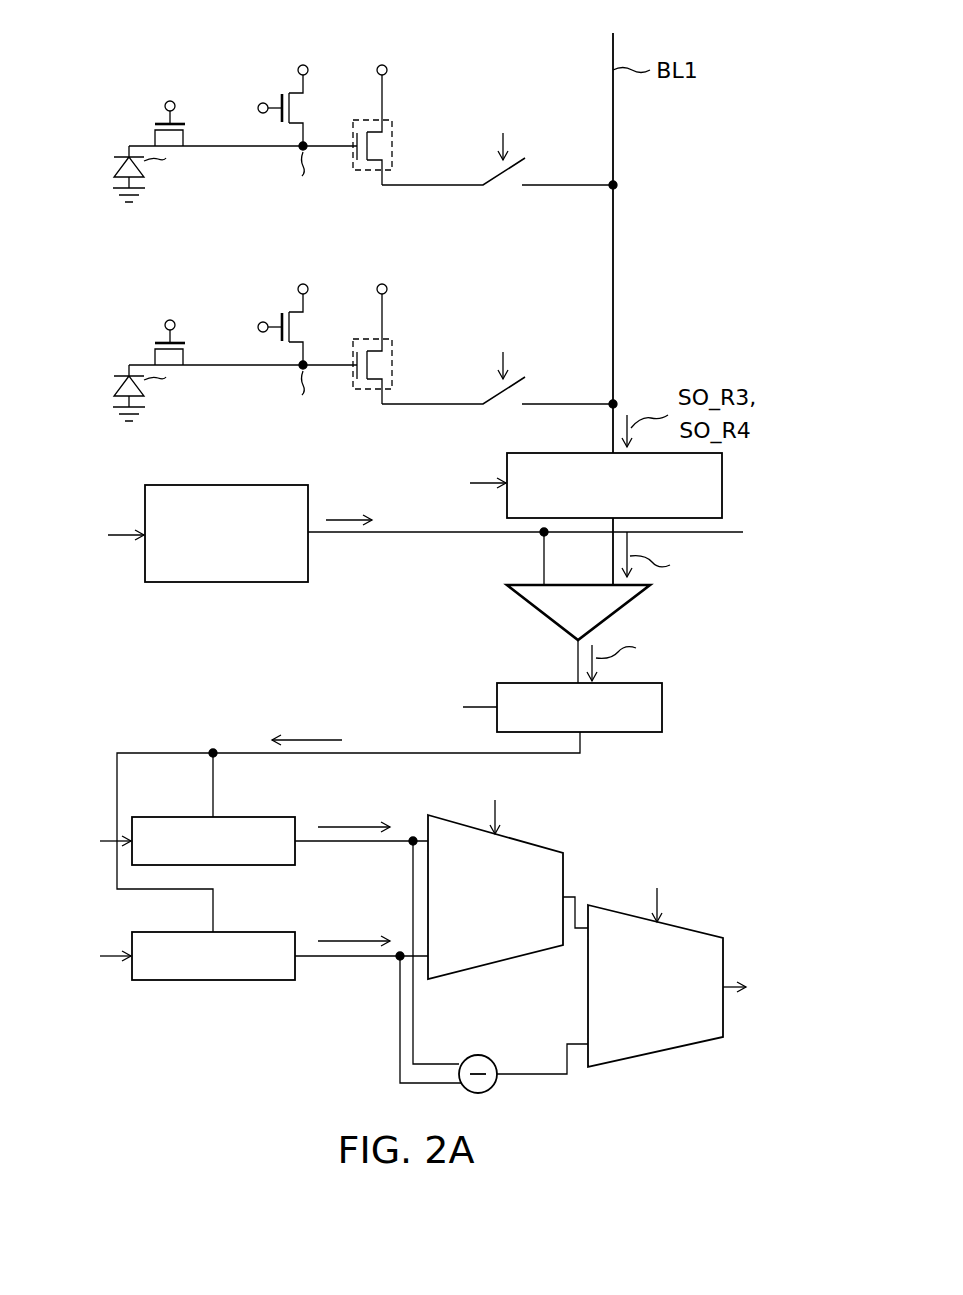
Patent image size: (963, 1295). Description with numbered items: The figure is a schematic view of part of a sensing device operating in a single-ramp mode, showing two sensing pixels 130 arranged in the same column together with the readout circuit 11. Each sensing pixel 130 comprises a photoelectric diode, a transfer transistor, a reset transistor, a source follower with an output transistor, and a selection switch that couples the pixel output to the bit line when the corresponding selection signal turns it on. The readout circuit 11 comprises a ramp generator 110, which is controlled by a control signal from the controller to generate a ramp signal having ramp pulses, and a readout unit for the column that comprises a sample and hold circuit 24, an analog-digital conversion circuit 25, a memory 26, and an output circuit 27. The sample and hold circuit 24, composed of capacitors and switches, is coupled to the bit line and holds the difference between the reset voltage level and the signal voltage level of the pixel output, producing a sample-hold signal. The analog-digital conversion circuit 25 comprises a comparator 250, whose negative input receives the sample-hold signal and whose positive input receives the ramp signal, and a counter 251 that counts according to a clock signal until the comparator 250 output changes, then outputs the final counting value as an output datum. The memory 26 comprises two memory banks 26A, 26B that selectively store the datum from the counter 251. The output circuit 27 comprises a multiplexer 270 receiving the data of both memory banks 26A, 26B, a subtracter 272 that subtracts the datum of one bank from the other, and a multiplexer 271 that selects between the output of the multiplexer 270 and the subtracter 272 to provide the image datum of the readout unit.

The sensing pixel 130 is at (130, 81).
The readout circuit 11 is at (86, 486).
The ramp generator 110 is at (222, 485).
The sample and hold circuit 24 is at (722, 483).
The analog-digital conversion circuit 25 is at (453, 630).
The comparator 250 is at (542, 610).
The counter 251 is at (662, 707).
The memory 26 is at (174, 1011).
The memory bank 26A is at (150, 817).
The memory bank 26B is at (150, 932).
The output circuit 27 is at (584, 826).
The multiplexer 270 is at (494, 966).
The multiplexer 271 is at (659, 1053).
The subtracter 272 is at (480, 1055).